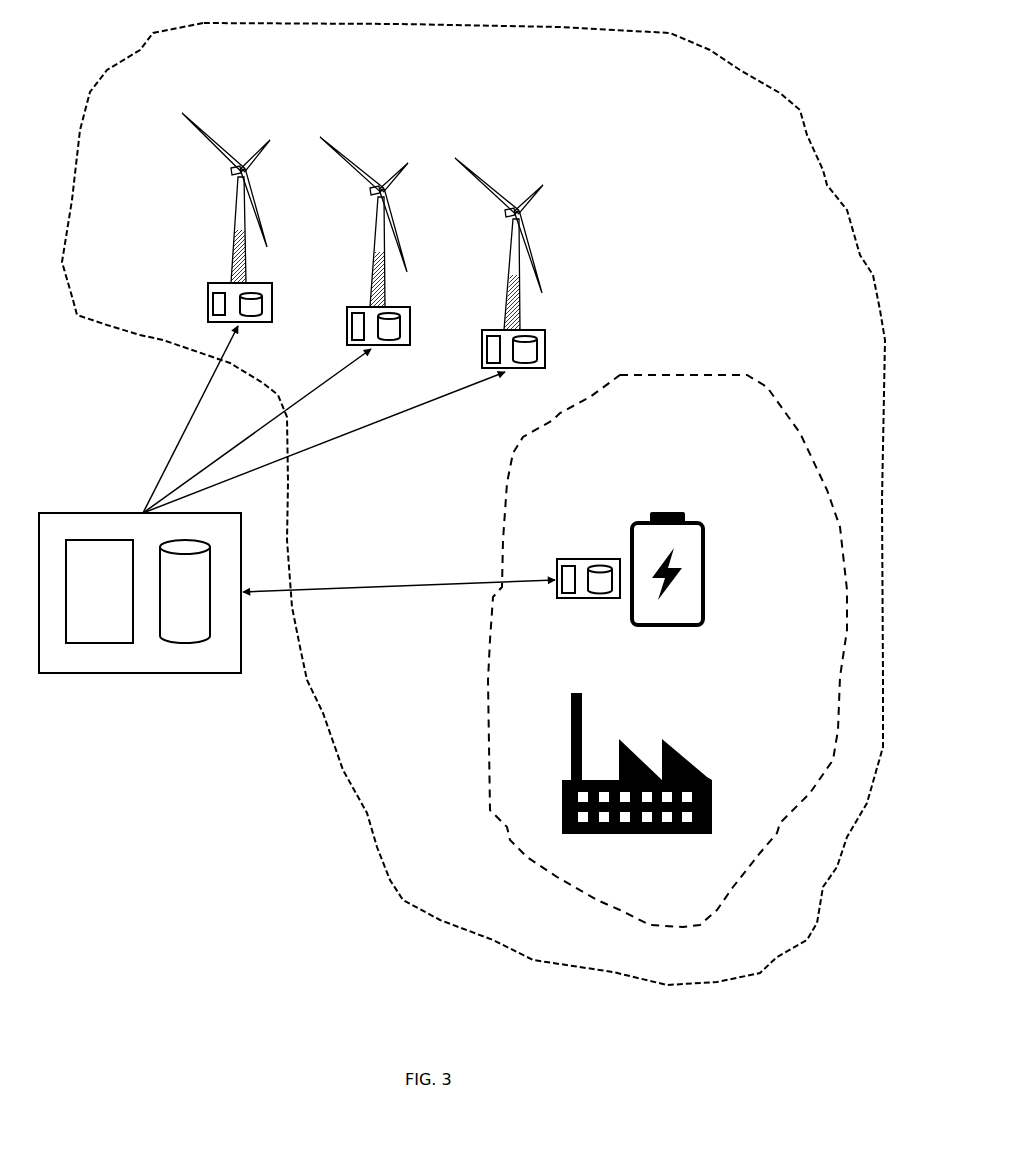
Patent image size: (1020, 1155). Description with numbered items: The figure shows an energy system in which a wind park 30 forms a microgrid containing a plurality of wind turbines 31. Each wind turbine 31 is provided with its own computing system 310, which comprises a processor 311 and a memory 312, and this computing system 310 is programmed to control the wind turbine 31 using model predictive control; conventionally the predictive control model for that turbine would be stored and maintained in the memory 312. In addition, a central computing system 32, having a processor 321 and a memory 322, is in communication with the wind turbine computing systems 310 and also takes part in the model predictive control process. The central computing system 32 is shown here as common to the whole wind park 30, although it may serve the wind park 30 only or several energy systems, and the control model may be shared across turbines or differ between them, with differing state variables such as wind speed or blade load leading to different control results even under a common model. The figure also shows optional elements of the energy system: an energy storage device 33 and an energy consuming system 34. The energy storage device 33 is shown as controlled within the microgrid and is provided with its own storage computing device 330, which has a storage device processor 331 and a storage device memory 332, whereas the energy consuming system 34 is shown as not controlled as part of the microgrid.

The wind park 30 is at (796, 98).
The wind turbine 31 is at (286, 142).
The computing system 310 is at (352, 308).
The processor 311 is at (204, 314).
The memory 312 is at (264, 320).
The central computing system 32 is at (140, 589).
The processor 321 is at (98, 647).
The memory 322 is at (180, 646).
The energy storage device 33 is at (670, 634).
The storage computing device 330 is at (566, 576).
The storage device processor 331 is at (557, 596).
The storage device memory 332 is at (596, 597).
The energy consuming system 34 is at (679, 856).